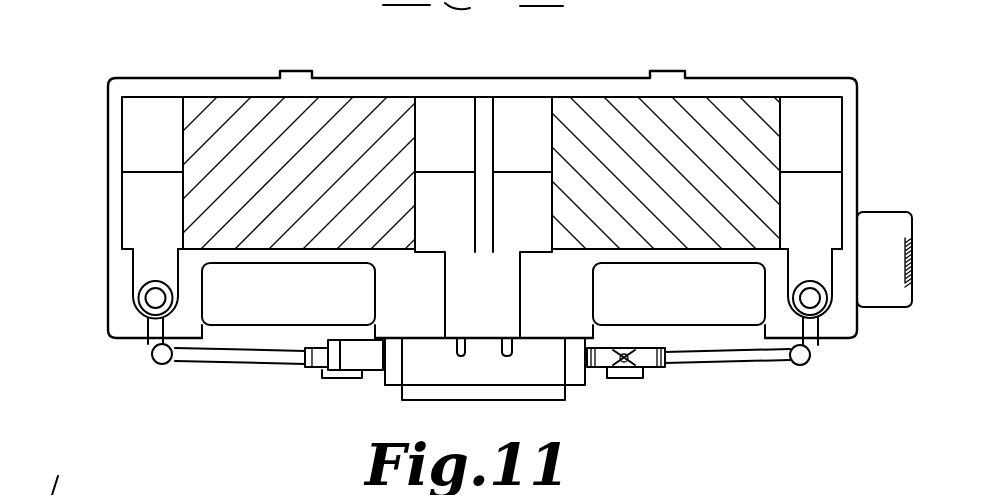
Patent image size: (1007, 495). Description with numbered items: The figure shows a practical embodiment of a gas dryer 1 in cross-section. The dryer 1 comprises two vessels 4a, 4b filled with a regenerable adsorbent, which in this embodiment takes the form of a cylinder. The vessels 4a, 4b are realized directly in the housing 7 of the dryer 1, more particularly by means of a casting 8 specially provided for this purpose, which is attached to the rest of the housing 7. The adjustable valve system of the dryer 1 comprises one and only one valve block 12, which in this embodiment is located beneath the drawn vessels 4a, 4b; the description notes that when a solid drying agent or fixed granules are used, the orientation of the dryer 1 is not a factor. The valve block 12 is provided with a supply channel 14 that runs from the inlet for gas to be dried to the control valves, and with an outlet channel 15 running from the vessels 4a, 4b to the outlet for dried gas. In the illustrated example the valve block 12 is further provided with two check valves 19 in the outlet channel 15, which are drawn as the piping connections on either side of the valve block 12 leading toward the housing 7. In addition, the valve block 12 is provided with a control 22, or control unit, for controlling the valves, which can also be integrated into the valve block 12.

The dryer 1 is at (80, 66).
The vessel 4a is at (368, 120).
The vessel 4b is at (675, 120).
The housing 7 is at (857, 162).
The casting 8 is at (183, 92).
The valve block 12 is at (450, 372).
The supply channel 14 is at (510, 350).
The outlet channel 15 is at (147, 268).
The check valves 19 is at (145, 325).
The control 22 is at (877, 300).